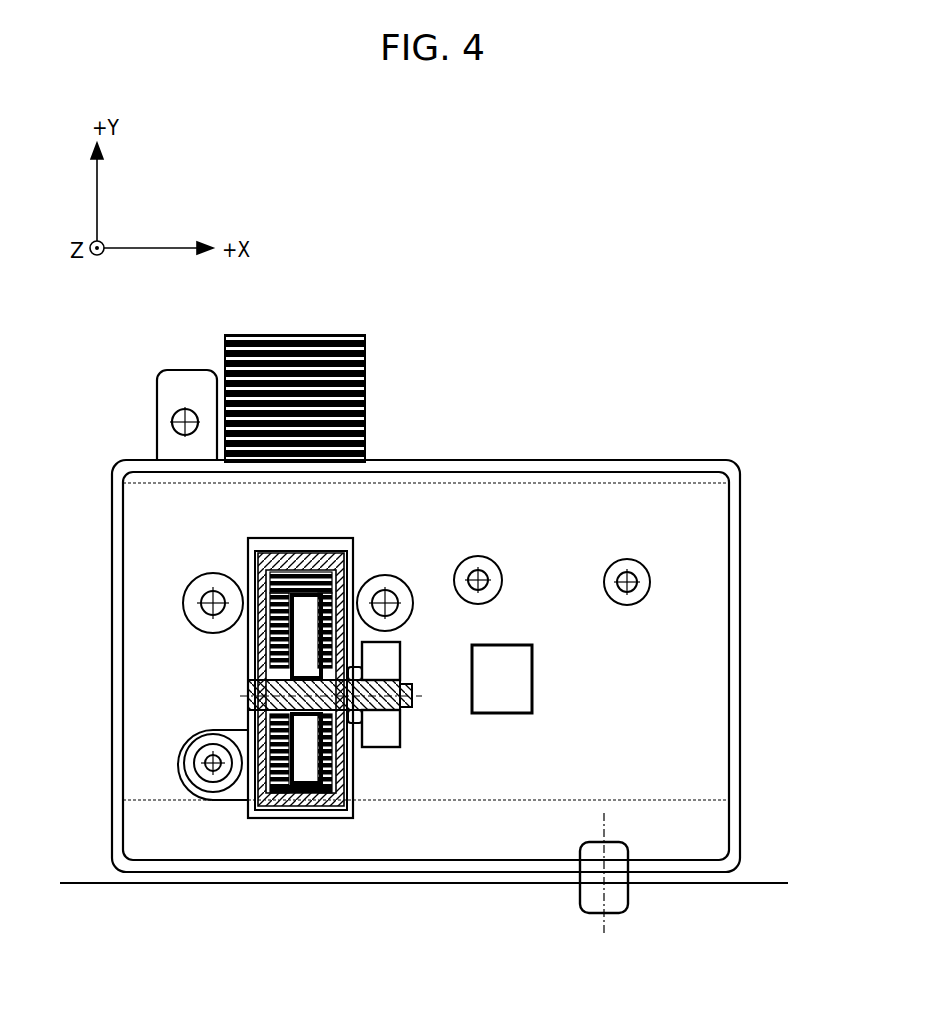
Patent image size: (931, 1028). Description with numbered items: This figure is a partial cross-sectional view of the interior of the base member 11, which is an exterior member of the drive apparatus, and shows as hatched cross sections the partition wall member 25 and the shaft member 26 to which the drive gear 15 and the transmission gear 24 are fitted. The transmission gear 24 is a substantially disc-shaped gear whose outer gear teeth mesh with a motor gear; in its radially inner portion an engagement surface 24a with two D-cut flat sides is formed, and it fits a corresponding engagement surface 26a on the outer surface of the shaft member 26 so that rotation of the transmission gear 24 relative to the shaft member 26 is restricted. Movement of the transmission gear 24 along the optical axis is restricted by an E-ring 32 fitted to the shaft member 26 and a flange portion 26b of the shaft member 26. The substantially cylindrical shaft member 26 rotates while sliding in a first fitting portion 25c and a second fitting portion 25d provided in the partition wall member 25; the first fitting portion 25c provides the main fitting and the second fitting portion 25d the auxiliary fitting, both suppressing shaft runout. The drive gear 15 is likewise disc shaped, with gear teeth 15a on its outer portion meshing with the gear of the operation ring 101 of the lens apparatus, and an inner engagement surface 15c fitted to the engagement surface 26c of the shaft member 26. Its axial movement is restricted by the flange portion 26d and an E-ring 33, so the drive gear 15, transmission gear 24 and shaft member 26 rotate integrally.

The base member 11 is at (700, 522).
The drive gear 15 is at (312, 762).
The gear teeth 15a is at (292, 788).
The engagement surface 15c is at (255, 577).
The transmission gear 24 is at (392, 735).
The engagement surface 24a is at (378, 720).
The partition wall member 25 is at (256, 812).
The first fitting portion 25c is at (322, 745).
The second fitting portion 25d is at (255, 684).
The shaft member 26 is at (395, 678).
The engagement surface 26a is at (372, 680).
The flange portion 26b is at (357, 712).
The engagement surface 26c is at (283, 676).
The flange portion 26d is at (352, 672).
The E-ring 32 is at (405, 683).
The E-ring 33 is at (252, 708).
The operation ring 101 is at (360, 335).